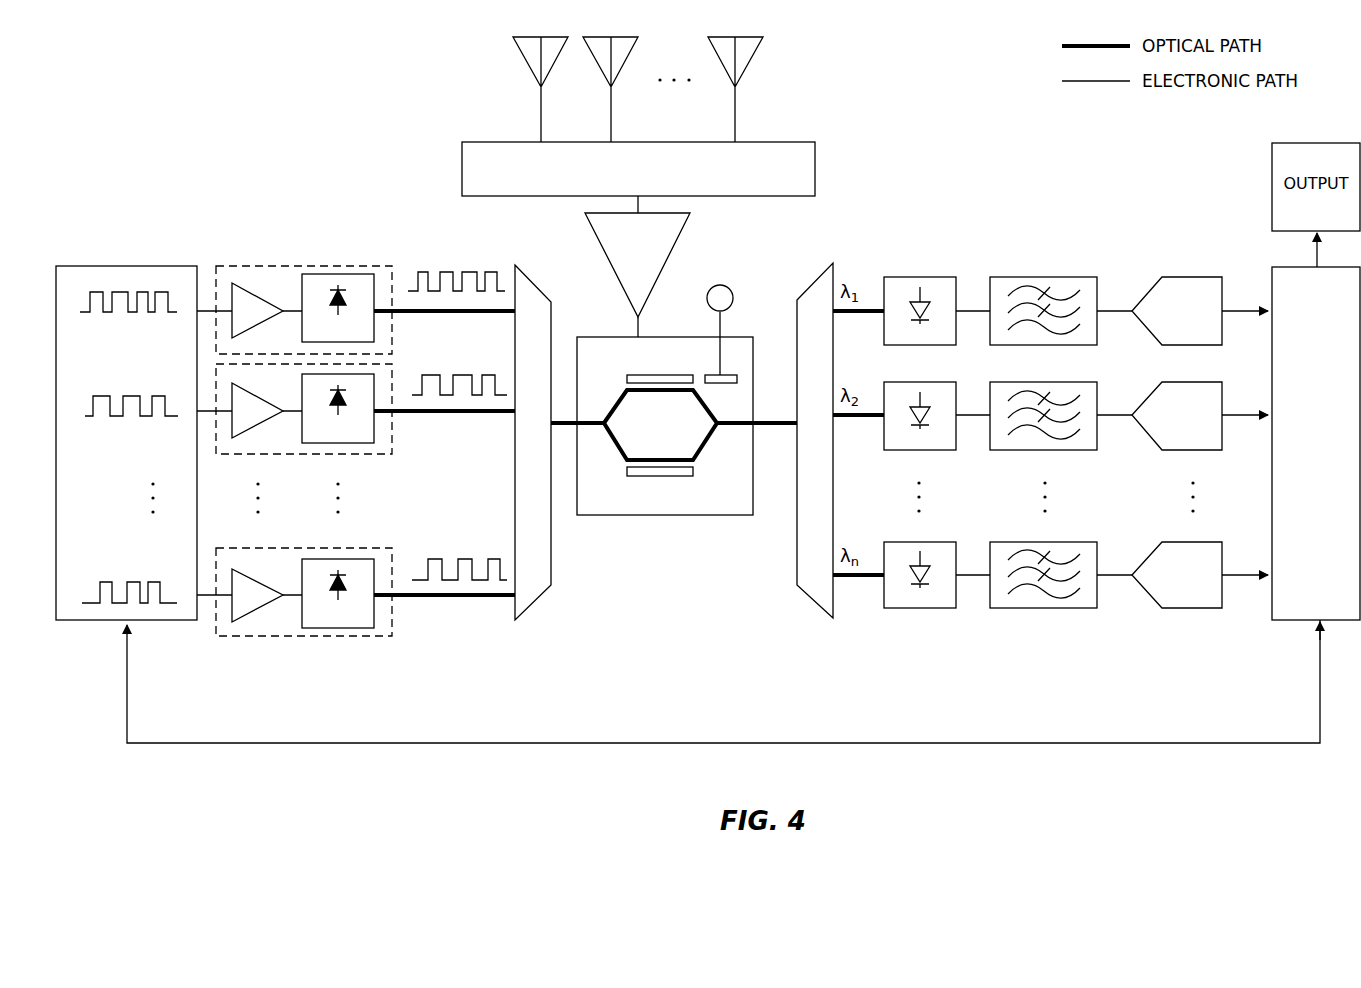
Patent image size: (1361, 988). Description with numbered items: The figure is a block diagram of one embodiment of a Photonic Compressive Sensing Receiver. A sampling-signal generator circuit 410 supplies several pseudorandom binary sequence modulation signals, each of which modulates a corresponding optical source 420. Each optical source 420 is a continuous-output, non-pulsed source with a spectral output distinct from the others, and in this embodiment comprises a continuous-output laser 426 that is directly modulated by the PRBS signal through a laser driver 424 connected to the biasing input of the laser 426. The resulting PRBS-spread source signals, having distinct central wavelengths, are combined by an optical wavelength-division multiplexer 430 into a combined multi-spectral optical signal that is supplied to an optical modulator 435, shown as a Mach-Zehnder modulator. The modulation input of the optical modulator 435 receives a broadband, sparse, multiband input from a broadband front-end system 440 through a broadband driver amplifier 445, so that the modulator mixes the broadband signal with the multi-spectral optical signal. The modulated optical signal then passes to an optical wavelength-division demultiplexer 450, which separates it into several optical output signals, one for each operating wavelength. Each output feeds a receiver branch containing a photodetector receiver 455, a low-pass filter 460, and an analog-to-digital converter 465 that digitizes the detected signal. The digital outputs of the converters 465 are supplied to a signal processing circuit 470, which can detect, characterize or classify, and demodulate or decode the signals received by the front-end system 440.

The sampling-signal generator circuit 410 is at (92, 620).
The optical source 420 is at (305, 636).
The laser driver 424 is at (250, 612).
The continuous-output laser 426 is at (362, 628).
The optical wavelength-division multiplexer 430 is at (538, 602).
The optical modulator 435 is at (690, 515).
The broadband front-end system 440 is at (462, 161).
The broadband driver amplifier 445 is at (597, 233).
The optical wavelength-division demultiplexer 450 is at (815, 605).
The photodetector receiver 455 is at (922, 630).
The low-pass filter 460 is at (1043, 630).
The analog-to-digital converter 465 is at (1200, 630).
The signal processing circuit 470 is at (1316, 443).